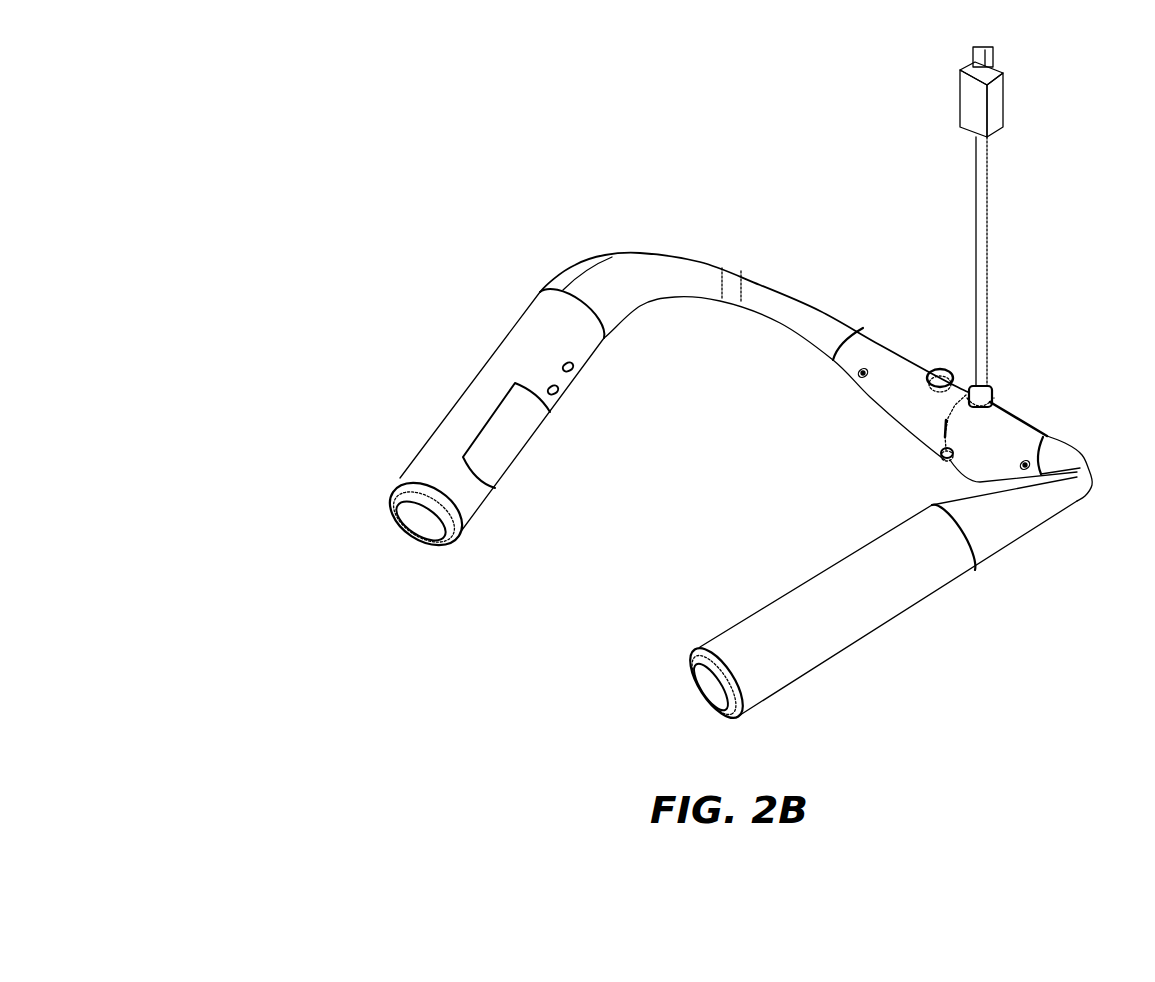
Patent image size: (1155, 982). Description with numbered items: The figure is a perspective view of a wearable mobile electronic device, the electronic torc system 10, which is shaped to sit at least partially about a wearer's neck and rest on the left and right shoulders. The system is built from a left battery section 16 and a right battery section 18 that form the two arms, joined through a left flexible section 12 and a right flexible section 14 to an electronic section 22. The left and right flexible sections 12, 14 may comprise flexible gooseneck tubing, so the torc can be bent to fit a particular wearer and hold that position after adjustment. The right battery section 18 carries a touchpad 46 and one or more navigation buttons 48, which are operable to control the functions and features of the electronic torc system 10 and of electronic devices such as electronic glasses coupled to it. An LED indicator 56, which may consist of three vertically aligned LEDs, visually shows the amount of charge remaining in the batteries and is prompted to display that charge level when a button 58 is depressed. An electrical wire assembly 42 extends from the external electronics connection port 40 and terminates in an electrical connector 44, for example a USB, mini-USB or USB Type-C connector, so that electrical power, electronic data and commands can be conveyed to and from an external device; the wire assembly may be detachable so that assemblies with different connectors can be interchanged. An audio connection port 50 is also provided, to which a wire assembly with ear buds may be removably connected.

The electronic torc system 10 is at (699, 386).
The left flexible section 12 is at (983, 429).
The right flexible section 14 is at (754, 331).
The left battery section 16 is at (878, 613).
The right battery section 18 is at (521, 423).
The electronic section 22 is at (1046, 394).
The external electronics connection port 40 is at (1024, 362).
The electrical wire assembly 42 is at (938, 261).
The electrical connector 44 is at (940, 92).
The touchpad 46 is at (517, 440).
The navigation buttons 48 is at (605, 406).
The audio connection port 50 is at (940, 372).
The LED indicator 56 is at (890, 422).
The button 58 is at (899, 464).